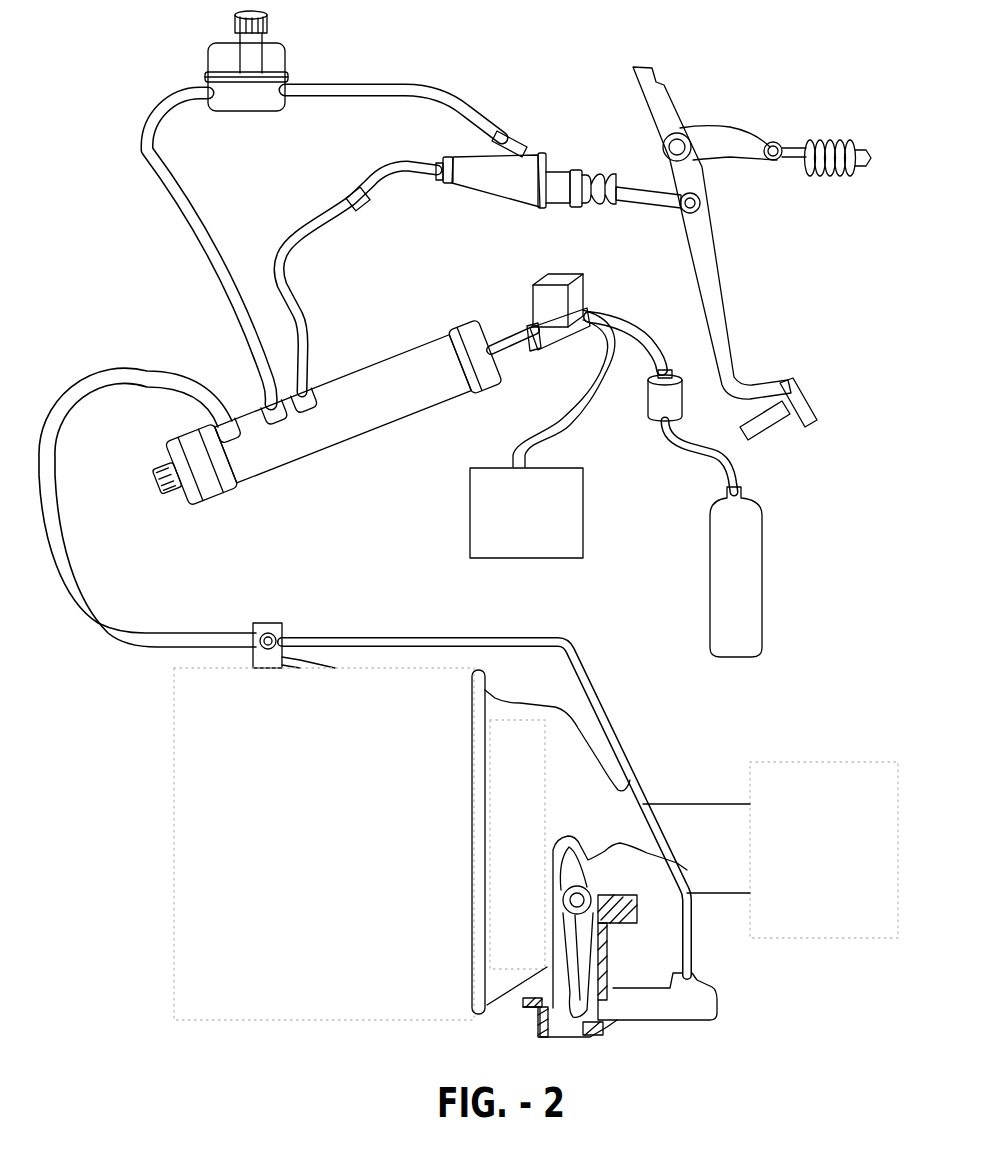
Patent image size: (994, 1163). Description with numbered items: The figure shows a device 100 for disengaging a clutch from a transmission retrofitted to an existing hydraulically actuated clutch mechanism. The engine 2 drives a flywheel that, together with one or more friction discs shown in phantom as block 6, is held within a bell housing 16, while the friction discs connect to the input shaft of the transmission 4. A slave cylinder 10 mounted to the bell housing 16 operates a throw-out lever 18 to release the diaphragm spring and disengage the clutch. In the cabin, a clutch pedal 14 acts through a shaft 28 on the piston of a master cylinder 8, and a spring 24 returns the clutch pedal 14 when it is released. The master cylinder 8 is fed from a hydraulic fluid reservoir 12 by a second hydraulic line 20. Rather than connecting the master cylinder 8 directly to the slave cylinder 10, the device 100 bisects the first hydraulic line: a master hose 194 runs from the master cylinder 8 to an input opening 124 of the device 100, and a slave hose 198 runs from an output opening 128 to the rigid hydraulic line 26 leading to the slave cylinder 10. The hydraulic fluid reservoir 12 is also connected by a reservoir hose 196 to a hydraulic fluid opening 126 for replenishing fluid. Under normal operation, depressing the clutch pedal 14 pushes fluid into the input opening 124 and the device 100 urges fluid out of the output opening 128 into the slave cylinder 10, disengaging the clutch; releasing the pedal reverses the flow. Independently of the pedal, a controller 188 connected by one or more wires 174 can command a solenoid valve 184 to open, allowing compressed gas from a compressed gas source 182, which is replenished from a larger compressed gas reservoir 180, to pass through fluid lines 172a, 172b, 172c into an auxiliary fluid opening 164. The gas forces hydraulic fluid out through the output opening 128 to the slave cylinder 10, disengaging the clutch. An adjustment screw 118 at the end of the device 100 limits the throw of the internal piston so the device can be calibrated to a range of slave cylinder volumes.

The engine 2 is at (324, 844).
The transmission 4 is at (770, 850).
The friction discs and flywheel 6 is at (551, 842).
The master cylinder 8 is at (463, 176).
The slave cylinder 10 is at (735, 994).
The hydraulic fluid reservoir 12 is at (303, 55).
The clutch pedal 14 is at (727, 302).
The bell housing 16 is at (580, 778).
The throw-out lever 18 is at (585, 939).
The second hydraulic line 20 is at (463, 112).
The spring 24 is at (825, 122).
The rigid hydraulic line 26 is at (446, 636).
The shaft 28 is at (639, 197).
The device 100 is at (309, 483).
The adjustment screw 118 is at (164, 504).
The input opening 124 is at (316, 391).
The hydraulic fluid opening 126 is at (251, 395).
The output opening 128 is at (200, 423).
The auxiliary fluid opening 164 is at (512, 362).
The fluid line 172a is at (499, 331).
The fluid line 172b is at (645, 325).
The fluid line 172c is at (687, 455).
The wires 174 is at (588, 423).
The compressed gas reservoir 180 is at (736, 572).
The compressed gas source 182 is at (677, 397).
The solenoid valve 184 is at (548, 283).
The controller 188 is at (526, 513).
The master hose 194 is at (308, 218).
The reservoir hose 196 is at (167, 205).
The slave hose 198 is at (134, 372).